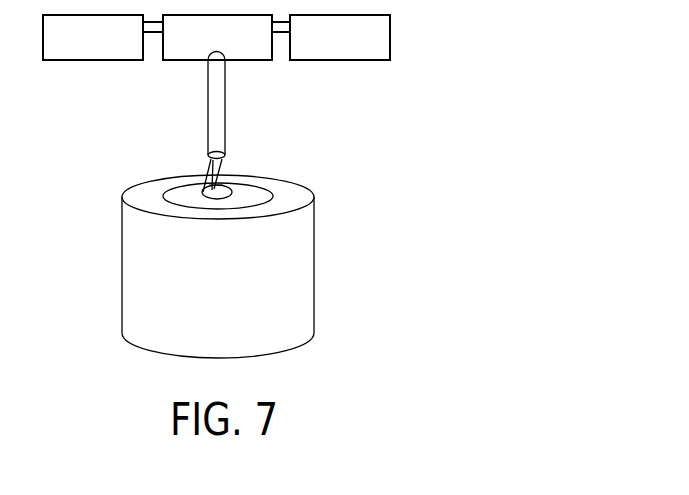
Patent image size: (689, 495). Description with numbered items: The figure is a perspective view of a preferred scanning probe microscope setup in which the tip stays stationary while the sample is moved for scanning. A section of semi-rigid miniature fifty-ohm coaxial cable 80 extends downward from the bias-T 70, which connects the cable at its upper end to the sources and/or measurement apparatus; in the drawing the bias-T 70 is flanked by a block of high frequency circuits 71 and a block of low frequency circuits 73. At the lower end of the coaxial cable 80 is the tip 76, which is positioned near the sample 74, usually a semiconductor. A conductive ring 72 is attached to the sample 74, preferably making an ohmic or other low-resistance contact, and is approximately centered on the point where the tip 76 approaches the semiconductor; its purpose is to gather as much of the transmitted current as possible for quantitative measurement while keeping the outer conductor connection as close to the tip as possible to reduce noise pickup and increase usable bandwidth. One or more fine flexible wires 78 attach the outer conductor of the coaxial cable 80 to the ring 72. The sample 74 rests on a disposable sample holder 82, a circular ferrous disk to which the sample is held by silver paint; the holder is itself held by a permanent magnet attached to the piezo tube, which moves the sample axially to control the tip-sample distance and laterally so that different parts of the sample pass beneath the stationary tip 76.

The bias-T 70 is at (217, 38).
The high frequency circuits 71 is at (93, 38).
The low frequency circuits 73 is at (340, 38).
The ring 72 is at (237, 182).
The sample 74 is at (173, 193).
The tip 76 is at (219, 183).
The fine flexible wire 78 is at (205, 175).
The coaxial cable 80 is at (222, 100).
The sample holder 82 is at (147, 324).